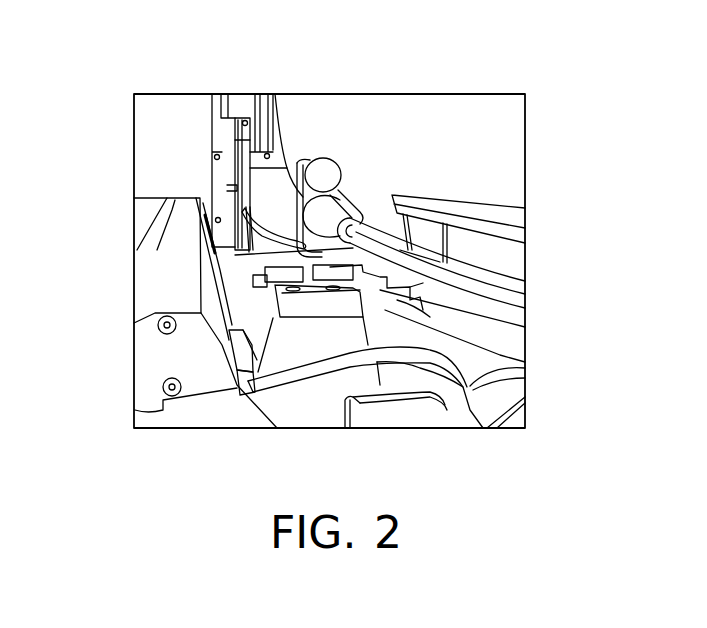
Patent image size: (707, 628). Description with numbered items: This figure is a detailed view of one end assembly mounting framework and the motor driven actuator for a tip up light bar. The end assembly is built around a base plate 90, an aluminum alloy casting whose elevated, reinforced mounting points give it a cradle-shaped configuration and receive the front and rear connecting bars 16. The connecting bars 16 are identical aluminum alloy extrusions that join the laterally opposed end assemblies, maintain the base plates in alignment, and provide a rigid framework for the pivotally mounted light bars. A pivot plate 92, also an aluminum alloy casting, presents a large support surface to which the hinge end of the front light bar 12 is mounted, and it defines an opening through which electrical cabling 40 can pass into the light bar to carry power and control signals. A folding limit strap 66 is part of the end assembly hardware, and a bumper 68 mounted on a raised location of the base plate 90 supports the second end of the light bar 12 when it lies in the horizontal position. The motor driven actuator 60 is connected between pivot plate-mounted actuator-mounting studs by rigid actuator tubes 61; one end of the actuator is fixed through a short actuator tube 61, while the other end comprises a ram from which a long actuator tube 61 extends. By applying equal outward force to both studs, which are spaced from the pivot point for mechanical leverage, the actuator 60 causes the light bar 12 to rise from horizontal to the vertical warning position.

The front light bar 12 is at (197, 106).
The connecting bar 16 is at (150, 290).
The electrical cabling 40 is at (517, 377).
The motor driven actuator 60 is at (322, 158).
The actuator tube 61 is at (453, 283).
The folding limit strap 66 is at (237, 173).
The bumper 68 is at (435, 320).
The base plate 90 is at (447, 407).
The pivot plate 92 is at (273, 115).